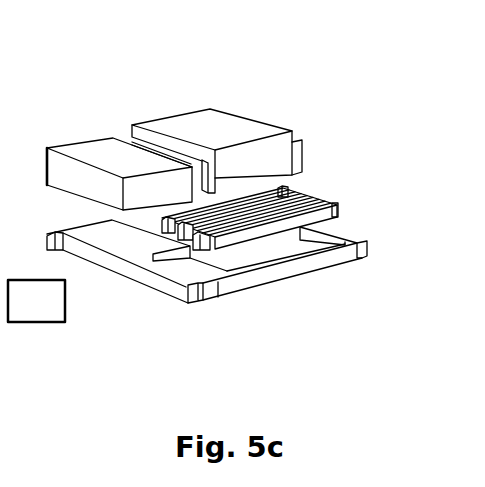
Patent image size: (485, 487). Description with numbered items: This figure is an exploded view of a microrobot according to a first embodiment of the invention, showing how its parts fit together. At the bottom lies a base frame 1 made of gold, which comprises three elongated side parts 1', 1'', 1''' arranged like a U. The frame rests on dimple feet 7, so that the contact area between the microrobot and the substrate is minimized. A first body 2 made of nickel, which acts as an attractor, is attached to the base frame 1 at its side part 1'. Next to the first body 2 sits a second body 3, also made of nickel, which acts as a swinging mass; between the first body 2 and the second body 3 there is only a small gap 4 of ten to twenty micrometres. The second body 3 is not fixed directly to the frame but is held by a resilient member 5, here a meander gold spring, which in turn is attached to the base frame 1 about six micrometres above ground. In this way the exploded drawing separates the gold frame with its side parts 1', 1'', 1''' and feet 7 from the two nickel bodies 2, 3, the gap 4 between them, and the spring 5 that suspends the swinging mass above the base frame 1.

The base frame 1 is at (227, 283).
The side part 1' is at (137, 268).
The side part 1'' is at (282, 288).
The side part 1''' is at (354, 226).
The first body 2 is at (101, 149).
The second body 3 is at (233, 119).
The gap 4 is at (130, 139).
The resilient member 5 is at (303, 202).
The dimple feet 7 is at (185, 303).